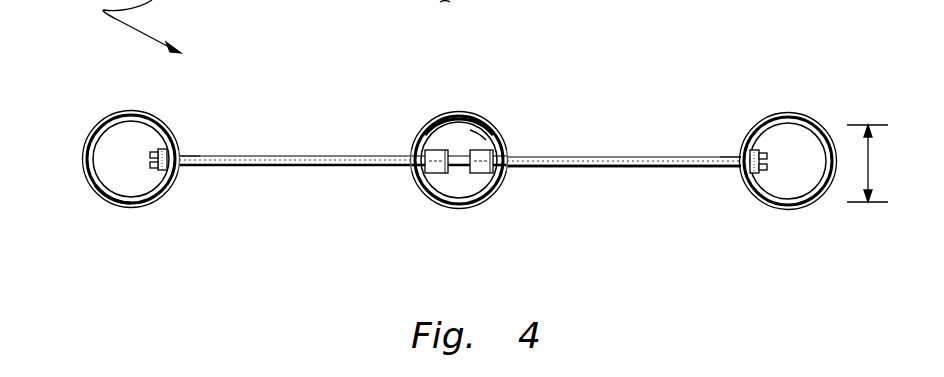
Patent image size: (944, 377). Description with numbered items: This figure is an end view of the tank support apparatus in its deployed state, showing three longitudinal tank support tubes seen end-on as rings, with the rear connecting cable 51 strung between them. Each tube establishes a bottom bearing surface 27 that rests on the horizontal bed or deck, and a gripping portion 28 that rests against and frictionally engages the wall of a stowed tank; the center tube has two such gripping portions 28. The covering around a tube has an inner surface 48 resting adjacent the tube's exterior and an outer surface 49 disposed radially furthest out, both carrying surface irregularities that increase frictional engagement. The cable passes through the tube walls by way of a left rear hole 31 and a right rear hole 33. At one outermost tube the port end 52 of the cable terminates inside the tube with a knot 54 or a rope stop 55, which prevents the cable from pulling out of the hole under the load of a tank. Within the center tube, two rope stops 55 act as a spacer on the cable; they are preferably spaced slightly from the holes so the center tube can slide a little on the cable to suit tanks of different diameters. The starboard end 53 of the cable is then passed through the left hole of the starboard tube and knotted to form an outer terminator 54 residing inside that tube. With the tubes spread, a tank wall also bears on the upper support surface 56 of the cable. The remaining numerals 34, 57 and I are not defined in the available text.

The bottom bearing surface 27 is at (131, 210).
The gripping portion 28 is at (153, 115).
The left rear hole 31 is at (411, 168).
The right rear hole 33 is at (183, 168).
The end ring 34 is at (108, 200).
The inner surface 48 is at (478, 132).
The outer surface 49 is at (460, 112).
The rear connecting cable 51 is at (290, 167).
The port end 52 is at (180, 157).
The starboard end 53 is at (731, 168).
The knot 54 is at (150, 160).
The rope stop 55 is at (478, 177).
The upper support surface 56 is at (634, 157).
The rod 57 is at (615, 167).
The ring inner diameter dimension I is at (872, 163).